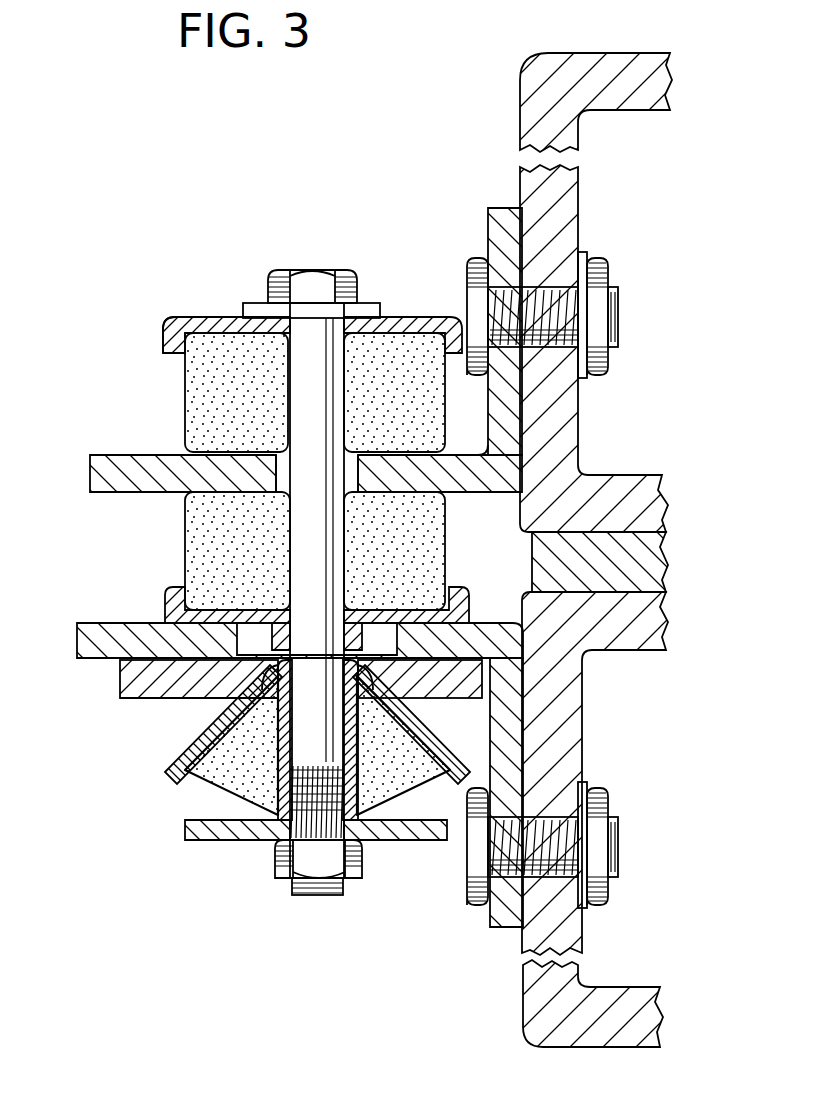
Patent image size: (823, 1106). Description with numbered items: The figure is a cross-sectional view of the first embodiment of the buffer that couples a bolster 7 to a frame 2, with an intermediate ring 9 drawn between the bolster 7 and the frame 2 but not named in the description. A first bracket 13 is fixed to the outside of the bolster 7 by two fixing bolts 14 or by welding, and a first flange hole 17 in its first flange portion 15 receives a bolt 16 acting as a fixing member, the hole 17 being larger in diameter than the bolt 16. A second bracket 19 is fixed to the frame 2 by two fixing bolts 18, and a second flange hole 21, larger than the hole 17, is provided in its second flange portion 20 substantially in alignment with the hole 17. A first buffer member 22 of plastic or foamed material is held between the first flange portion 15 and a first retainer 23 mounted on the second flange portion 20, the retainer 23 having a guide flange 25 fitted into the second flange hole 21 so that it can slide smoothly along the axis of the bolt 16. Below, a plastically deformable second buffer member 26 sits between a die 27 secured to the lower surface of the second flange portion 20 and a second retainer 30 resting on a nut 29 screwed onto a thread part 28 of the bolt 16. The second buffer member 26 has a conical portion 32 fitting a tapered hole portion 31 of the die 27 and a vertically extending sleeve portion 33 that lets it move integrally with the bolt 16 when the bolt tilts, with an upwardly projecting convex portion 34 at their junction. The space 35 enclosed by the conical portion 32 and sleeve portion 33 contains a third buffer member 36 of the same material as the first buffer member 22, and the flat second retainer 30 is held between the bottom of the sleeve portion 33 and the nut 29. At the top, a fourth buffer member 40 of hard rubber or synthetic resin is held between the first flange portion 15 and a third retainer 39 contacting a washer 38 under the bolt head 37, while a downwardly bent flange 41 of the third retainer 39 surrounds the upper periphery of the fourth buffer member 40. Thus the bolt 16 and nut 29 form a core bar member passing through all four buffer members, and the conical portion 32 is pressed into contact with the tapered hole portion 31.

The frame 2 is at (570, 716).
The bolster 7 is at (575, 215).
The spacer ring 9 is at (662, 560).
The first bracket 13 is at (497, 212).
The fixing bolts 14 is at (472, 260).
The first flange portion 15 is at (108, 455).
The bolt 16 is at (303, 368).
The first flange hole 17 is at (282, 473).
The fixing bolts 18 is at (478, 850).
The second bracket 19 is at (75, 652).
The second flange portion 20 is at (97, 648).
The second flange hole 21 is at (390, 640).
The first buffer member 22 is at (210, 538).
The first retainer 23 is at (163, 600).
The guide flange 25 is at (262, 640).
The second buffer member 26 is at (279, 749).
The die 27 is at (125, 700).
The thread part 28 is at (310, 895).
The nut 29 is at (355, 858).
The second retainer 30 is at (240, 838).
The tapered hole portion 31 is at (202, 702).
The conical portion 32 is at (460, 775).
The sleeve portion 33 is at (283, 725).
The convex portion 34 is at (367, 675).
The space 35 is at (170, 775).
The third buffer member 36 is at (258, 795).
The bolt head 37 is at (318, 290).
The washer 38 is at (262, 310).
The third retainer 39 is at (420, 322).
The fourth buffer member 40 is at (205, 420).
The flange 41 is at (165, 345).